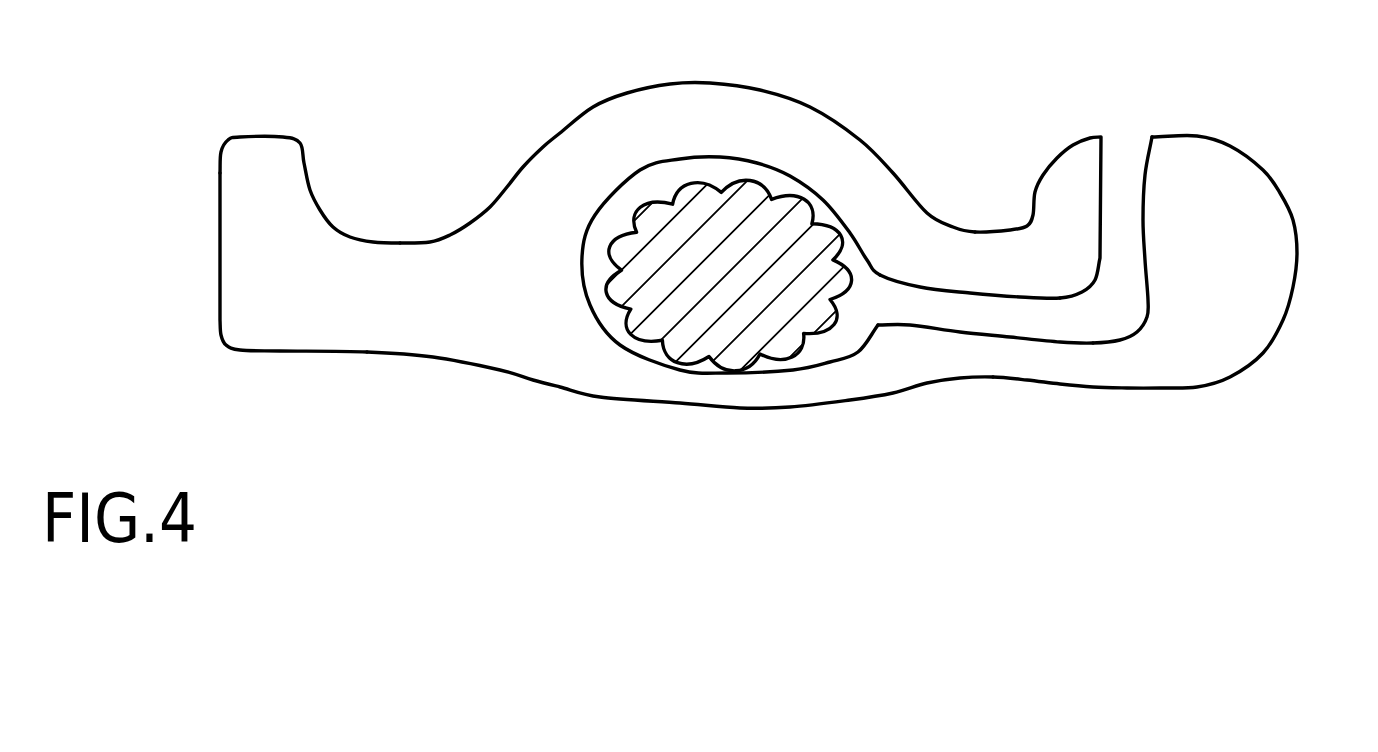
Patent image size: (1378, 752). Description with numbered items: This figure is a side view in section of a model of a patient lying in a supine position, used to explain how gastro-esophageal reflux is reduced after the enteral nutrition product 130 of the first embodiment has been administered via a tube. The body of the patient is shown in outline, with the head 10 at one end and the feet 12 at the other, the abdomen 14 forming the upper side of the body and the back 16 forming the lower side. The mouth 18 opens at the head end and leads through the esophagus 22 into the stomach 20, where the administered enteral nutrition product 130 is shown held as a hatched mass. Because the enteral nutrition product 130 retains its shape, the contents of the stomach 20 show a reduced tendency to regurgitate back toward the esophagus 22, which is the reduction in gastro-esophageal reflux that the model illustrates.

The head 10 is at (1278, 230).
The feet 12 is at (257, 157).
The abdomen 14 is at (657, 107).
The back 16 is at (713, 388).
The mouth 18 is at (1125, 147).
The stomach 20 is at (783, 193).
The esophagus 22 is at (1088, 332).
The enteral nutrition product 130 is at (798, 328).